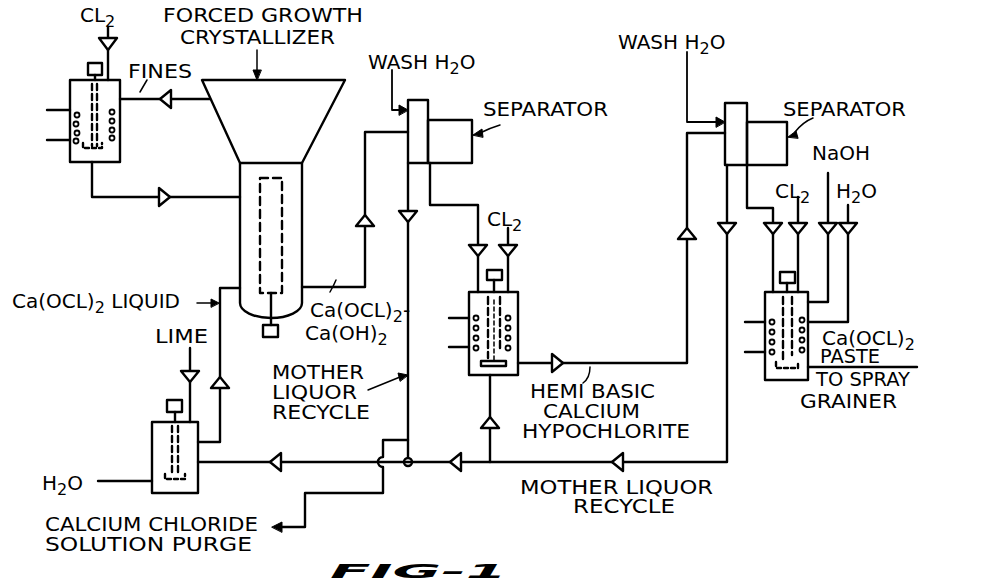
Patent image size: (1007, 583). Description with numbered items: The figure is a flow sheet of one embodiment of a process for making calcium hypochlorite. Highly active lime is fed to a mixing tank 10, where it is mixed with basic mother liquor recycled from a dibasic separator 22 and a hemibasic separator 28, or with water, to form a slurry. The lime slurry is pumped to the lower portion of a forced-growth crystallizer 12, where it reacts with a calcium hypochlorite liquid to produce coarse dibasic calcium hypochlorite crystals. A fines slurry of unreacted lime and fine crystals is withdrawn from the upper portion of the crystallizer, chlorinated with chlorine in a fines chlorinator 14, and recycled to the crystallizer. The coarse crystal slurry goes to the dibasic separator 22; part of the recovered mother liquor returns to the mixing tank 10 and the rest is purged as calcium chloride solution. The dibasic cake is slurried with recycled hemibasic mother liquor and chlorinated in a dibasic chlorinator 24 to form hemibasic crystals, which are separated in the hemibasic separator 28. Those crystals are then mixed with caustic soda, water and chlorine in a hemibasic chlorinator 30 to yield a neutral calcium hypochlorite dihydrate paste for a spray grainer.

The mixing tank 10 is at (152, 440).
The forced-growth crystallizer 12 is at (302, 197).
The fines chlorinator 14 is at (120, 150).
The dibasic separator 22 is at (472, 153).
The dibasic chlorinator 24 is at (518, 320).
The hemibasic separator 28 is at (765, 122).
The hemibasic chlorinator 30 is at (778, 380).